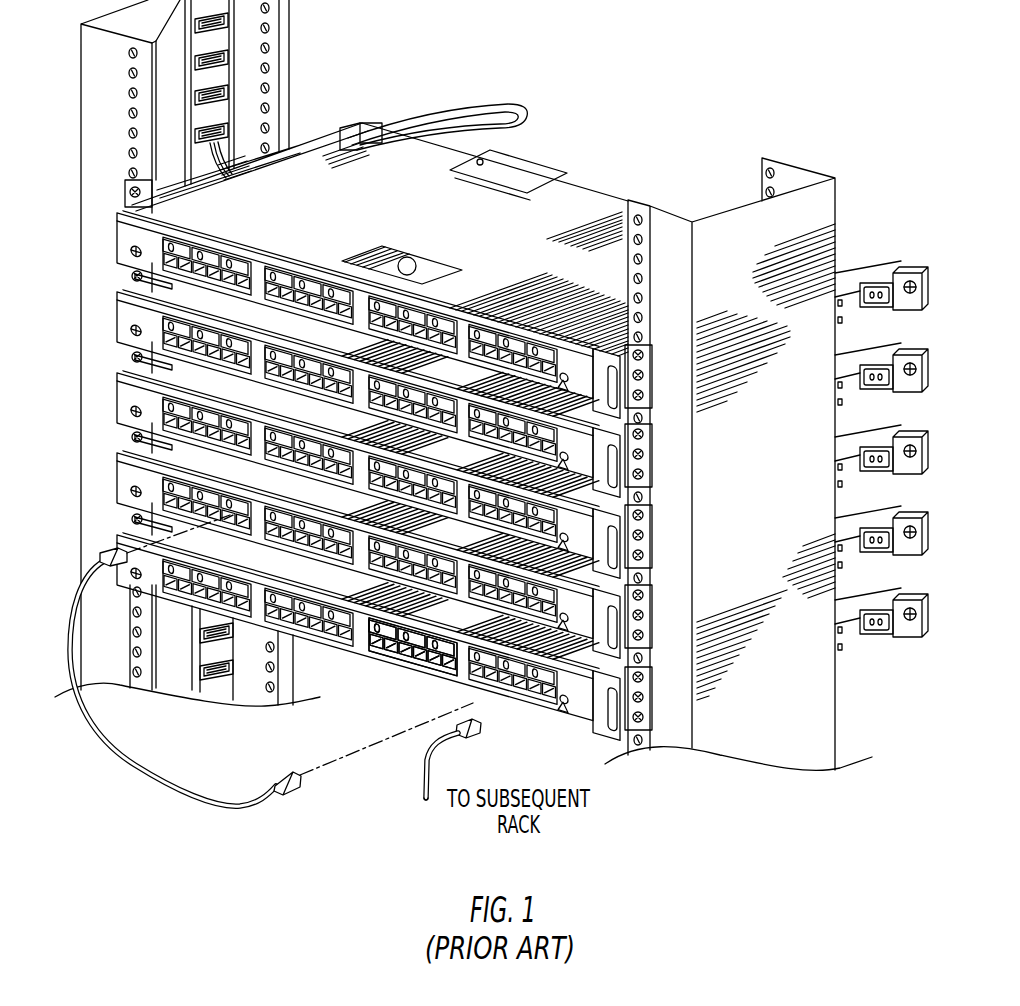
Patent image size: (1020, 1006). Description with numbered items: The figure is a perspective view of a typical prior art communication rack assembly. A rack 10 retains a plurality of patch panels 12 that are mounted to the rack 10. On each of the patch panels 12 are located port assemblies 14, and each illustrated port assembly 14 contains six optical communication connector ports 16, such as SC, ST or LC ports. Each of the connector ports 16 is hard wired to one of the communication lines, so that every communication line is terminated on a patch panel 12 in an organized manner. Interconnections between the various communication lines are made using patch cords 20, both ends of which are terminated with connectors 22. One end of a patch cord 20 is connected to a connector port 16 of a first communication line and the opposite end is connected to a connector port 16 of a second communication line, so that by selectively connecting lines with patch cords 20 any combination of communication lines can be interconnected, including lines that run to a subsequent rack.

The rack 10 is at (100, 205).
The patch panel 12 is at (520, 228).
The port assembly 14 is at (279, 302).
The communication connector port 16 is at (430, 672).
The patch cord 20 is at (92, 717).
The connector 22 is at (100, 553).